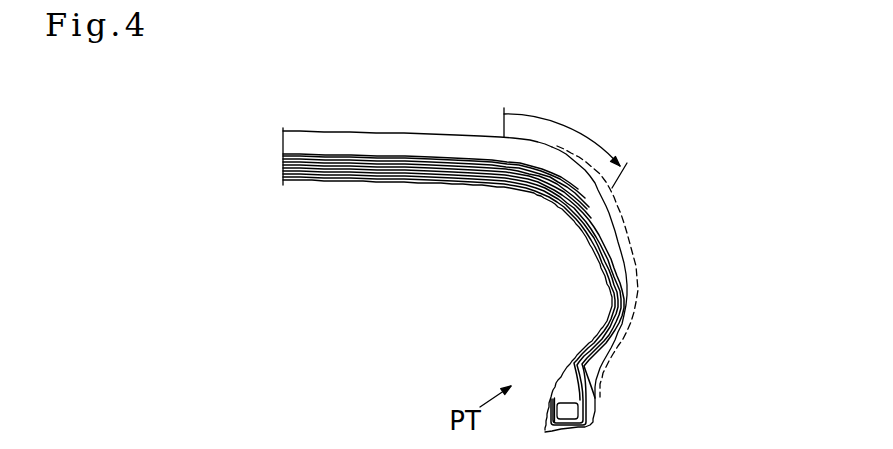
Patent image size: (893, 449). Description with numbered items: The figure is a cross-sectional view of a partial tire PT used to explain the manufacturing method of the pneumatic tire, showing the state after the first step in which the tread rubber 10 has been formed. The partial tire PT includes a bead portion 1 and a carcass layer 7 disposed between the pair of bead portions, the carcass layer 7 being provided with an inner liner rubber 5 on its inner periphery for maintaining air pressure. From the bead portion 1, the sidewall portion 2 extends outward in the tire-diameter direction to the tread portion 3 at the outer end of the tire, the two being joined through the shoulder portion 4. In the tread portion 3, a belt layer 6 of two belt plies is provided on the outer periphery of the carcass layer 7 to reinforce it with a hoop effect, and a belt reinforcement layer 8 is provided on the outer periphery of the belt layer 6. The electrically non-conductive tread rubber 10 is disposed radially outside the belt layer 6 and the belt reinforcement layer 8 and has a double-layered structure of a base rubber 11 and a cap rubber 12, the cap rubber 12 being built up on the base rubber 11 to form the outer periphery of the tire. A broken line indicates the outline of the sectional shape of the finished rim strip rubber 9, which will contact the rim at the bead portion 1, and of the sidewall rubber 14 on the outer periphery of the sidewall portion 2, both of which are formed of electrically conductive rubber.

The bead portion 1 is at (592, 422).
The sidewall portion 2 is at (655, 246).
The tread portion 3 is at (291, 114).
The shoulder portion 4 is at (565, 145).
The inner liner rubber 5 is at (410, 183).
The belt layer 6 is at (452, 184).
The carcass layer 7 is at (580, 207).
The belt reinforcement layer 8 is at (504, 187).
The rim strip rubber 9 is at (583, 400).
The tread rubber 10 is at (386, 82).
The base rubber 11 is at (333, 152).
The cap rubber 12 is at (371, 131).
The sidewall rubber 14 is at (641, 291).